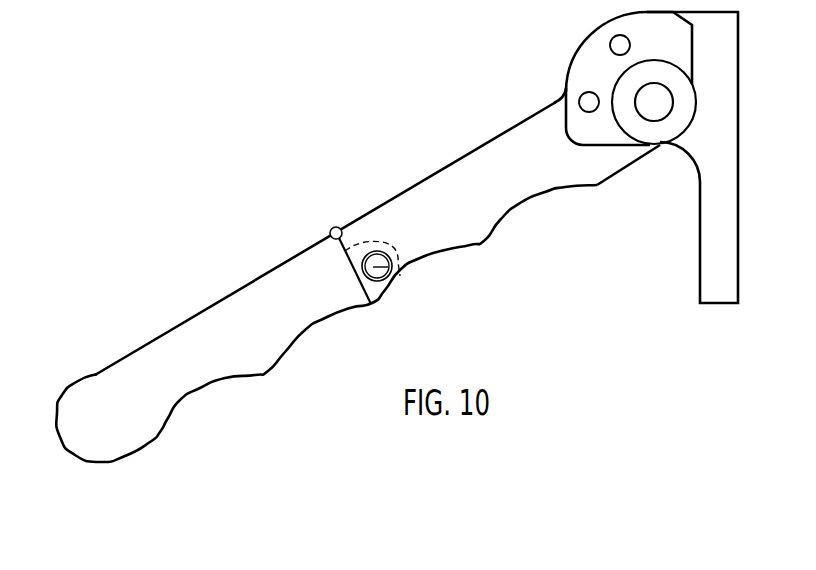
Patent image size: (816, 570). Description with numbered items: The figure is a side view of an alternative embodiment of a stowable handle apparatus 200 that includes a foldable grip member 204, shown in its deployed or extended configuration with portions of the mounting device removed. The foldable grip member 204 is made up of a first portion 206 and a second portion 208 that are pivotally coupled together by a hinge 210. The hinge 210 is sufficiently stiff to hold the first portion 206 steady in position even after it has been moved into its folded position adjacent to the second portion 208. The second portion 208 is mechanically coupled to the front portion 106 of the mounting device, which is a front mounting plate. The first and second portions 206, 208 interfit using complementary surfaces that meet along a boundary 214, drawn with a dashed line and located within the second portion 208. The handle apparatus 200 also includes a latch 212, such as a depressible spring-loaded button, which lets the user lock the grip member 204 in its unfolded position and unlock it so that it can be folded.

The front portion 106 is at (713, 210).
The handle apparatus 200 is at (278, 66).
The foldable grip member 204 is at (275, 196).
The first portion 206 is at (240, 288).
The second portion 208 is at (462, 160).
The hinge 210 is at (335, 227).
The latch 212 is at (398, 273).
The boundary 214 is at (396, 247).